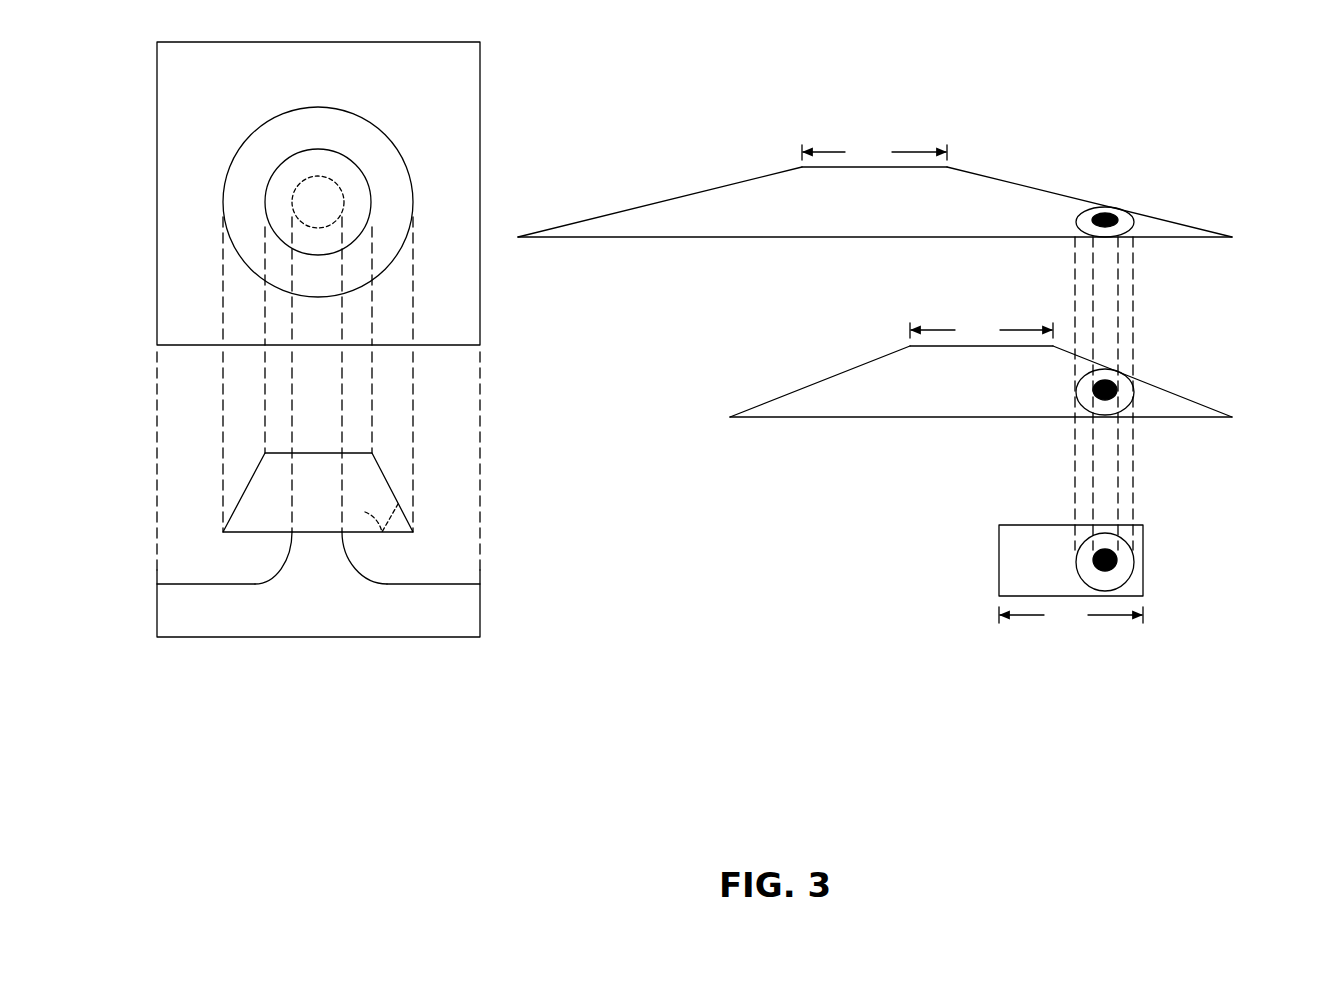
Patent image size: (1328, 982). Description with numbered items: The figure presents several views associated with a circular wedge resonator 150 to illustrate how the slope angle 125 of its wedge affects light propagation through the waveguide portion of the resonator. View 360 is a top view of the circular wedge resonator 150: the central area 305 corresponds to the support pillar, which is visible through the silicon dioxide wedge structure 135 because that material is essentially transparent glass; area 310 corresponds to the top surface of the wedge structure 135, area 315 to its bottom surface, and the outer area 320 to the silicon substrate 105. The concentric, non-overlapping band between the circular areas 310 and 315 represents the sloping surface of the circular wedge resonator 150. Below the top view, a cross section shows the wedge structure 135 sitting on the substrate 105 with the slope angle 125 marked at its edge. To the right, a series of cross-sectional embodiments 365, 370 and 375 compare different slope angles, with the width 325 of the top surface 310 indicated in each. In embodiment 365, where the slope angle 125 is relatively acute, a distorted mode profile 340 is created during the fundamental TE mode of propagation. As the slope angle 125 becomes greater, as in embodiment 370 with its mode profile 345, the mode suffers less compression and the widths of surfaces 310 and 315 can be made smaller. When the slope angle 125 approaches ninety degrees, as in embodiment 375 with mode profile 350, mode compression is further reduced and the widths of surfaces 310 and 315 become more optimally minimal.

The silicon substrate 105 is at (300, 610).
The slope angle 125 is at (370, 510).
The silicon dioxide wedge structure 135 is at (252, 511).
The circular wedge resonator 150 is at (130, 507).
The support pillar area 305 is at (300, 211).
The top surface area 310 is at (300, 176).
The bottom surface area 315 is at (300, 141).
The substrate area 320 is at (300, 91).
The width dimension 325 is at (972, 383).
The mode profile 340 is at (1142, 213).
The second cross-section spot 345 is at (1156, 382).
The third cross-section spot 350 is at (1149, 561).
The top view 360 is at (520, 112).
The embodiment with acute slope angle 365 is at (1272, 202).
The second cross-section 370 is at (1274, 379).
The third cross-section 375 is at (1270, 561).